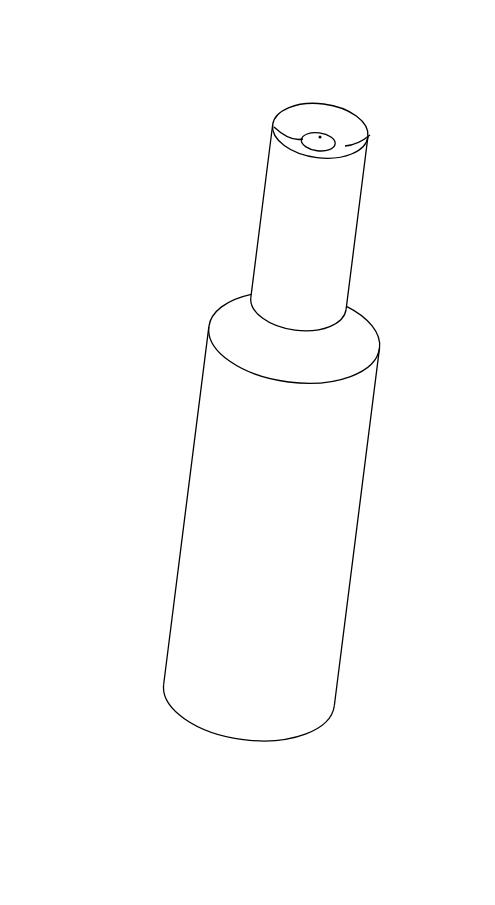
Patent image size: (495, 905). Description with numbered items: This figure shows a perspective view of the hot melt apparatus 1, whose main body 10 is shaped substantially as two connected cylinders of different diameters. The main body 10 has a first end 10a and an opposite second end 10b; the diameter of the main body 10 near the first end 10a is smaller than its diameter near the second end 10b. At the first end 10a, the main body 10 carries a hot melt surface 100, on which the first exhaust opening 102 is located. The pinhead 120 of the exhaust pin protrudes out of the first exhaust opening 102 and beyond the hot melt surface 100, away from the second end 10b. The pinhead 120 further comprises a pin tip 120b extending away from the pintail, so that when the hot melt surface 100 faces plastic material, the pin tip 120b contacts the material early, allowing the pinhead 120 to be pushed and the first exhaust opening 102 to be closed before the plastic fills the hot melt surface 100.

The hot melt apparatus 1 is at (173, 56).
The main body 10 is at (337, 443).
The first end 10a is at (357, 76).
The second end 10b is at (189, 742).
The hot melt surface 100 is at (370, 133).
The first exhaust opening 102 is at (343, 126).
The pinhead 120 is at (275, 126).
The pin tip 120b is at (321, 136).